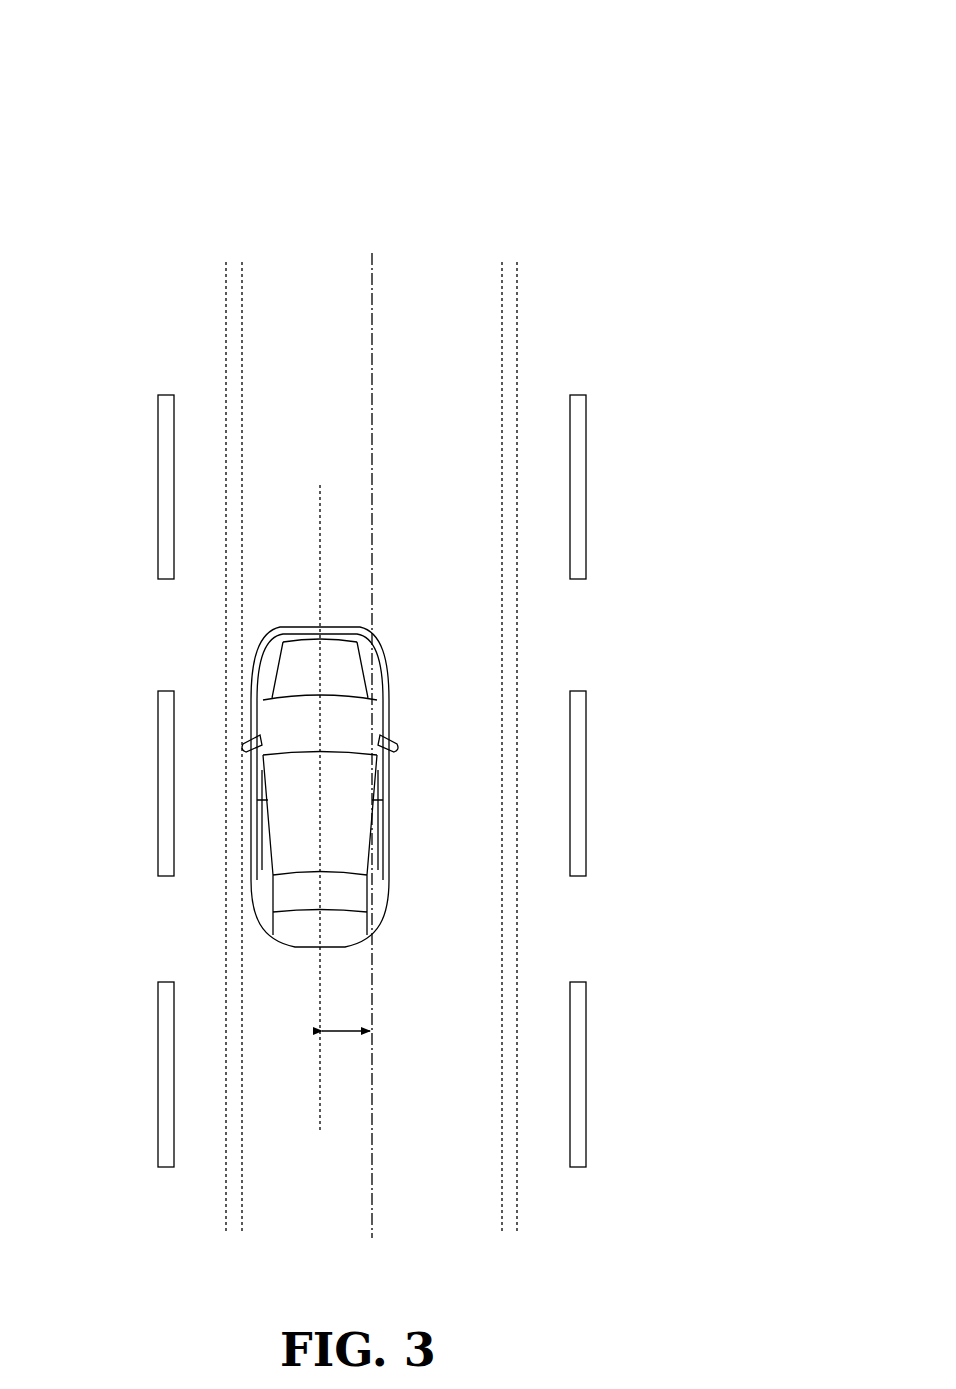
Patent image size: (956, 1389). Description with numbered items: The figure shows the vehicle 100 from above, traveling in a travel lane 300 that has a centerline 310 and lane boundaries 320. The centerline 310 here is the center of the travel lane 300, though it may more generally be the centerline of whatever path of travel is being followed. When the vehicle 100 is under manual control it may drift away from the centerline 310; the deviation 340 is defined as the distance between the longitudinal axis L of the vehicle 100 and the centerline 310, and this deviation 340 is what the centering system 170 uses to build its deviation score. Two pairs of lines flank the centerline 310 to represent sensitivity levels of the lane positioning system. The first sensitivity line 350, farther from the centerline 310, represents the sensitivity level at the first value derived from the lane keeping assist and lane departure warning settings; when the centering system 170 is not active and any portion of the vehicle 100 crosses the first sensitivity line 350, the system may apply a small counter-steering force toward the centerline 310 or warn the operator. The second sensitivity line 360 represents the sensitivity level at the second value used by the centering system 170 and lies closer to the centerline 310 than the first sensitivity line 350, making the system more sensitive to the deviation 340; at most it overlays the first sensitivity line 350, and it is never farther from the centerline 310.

The centering system 170 is at (541, 83).
The travel lane 300 is at (318, 170).
The centerline 310 is at (397, 484).
The lane boundaries 320 is at (138, 437).
The deviation 340 is at (349, 1020).
The first sensitivity line 350 is at (224, 312).
The second sensitivity line 360 is at (245, 300).
The vehicle 100 is at (395, 686).
The longitudinal axis L is at (320, 795).